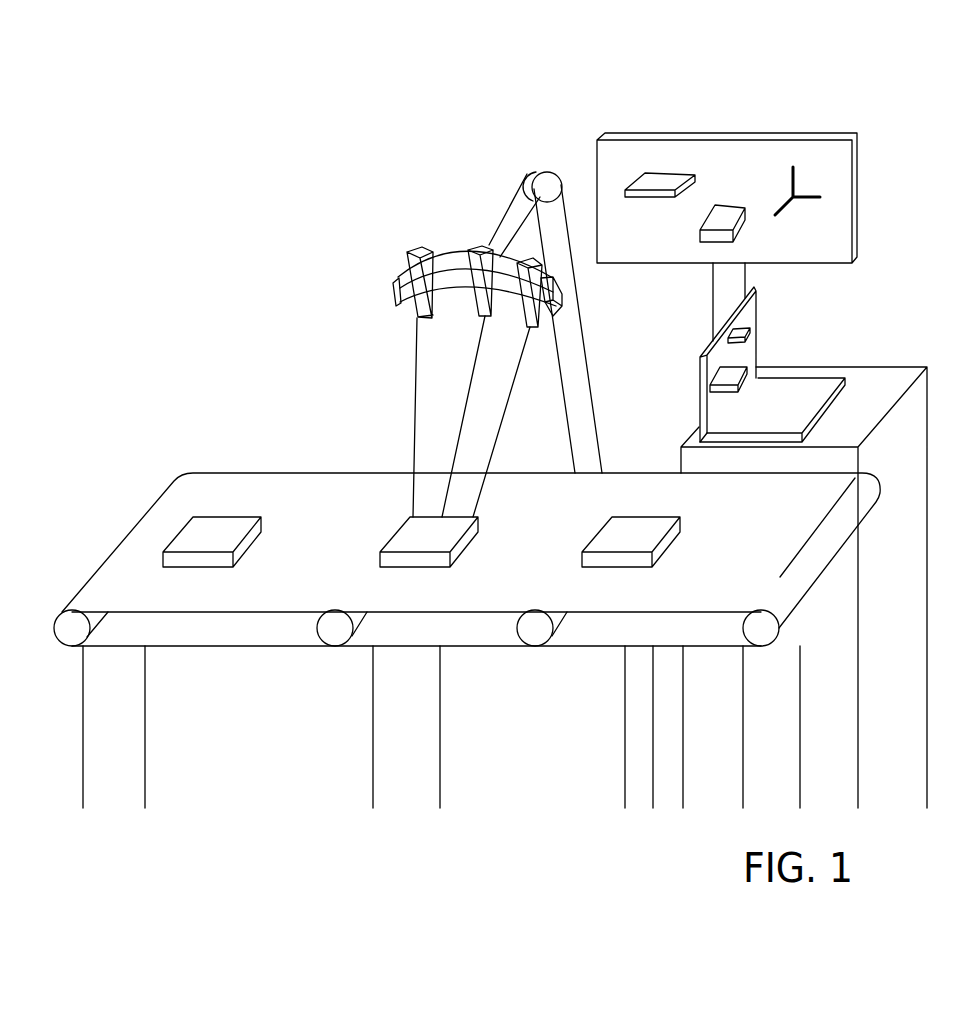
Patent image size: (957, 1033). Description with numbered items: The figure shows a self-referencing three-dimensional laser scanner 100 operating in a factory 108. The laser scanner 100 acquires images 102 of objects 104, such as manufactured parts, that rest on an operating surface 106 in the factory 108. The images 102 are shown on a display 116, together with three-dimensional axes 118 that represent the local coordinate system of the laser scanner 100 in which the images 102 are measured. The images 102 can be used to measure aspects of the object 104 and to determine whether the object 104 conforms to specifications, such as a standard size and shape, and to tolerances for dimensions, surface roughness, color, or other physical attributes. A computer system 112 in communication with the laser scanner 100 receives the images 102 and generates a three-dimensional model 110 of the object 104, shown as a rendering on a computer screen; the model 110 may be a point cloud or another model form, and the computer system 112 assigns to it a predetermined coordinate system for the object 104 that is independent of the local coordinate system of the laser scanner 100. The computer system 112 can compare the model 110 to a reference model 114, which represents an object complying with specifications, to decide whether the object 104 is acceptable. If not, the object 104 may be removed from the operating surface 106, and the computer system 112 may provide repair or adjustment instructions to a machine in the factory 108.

The self-referencing 3-D laser scanner 100 is at (454, 228).
The images 102 is at (727, 172).
The object 104 is at (395, 534).
The operating surface 106 is at (297, 472).
The factory 108 is at (280, 300).
The 3-D model 110 is at (752, 368).
The computer system 112 is at (838, 403).
The reference model 114 is at (752, 338).
The display 116 is at (662, 132).
The 3-D axes 118 is at (822, 157).